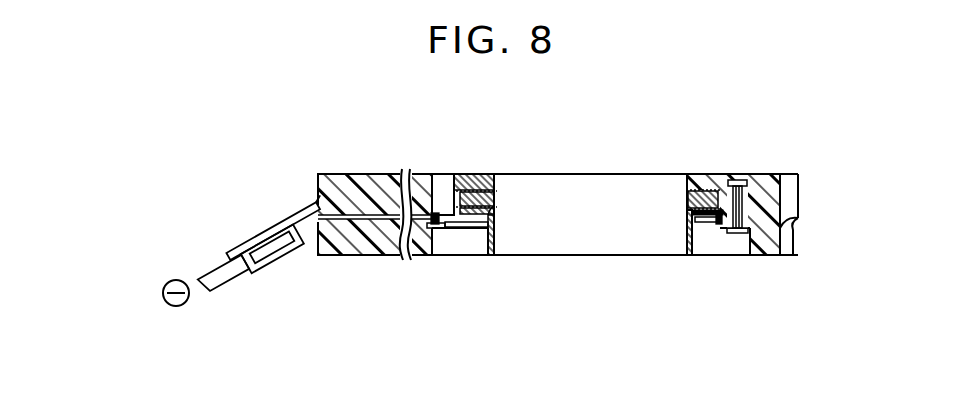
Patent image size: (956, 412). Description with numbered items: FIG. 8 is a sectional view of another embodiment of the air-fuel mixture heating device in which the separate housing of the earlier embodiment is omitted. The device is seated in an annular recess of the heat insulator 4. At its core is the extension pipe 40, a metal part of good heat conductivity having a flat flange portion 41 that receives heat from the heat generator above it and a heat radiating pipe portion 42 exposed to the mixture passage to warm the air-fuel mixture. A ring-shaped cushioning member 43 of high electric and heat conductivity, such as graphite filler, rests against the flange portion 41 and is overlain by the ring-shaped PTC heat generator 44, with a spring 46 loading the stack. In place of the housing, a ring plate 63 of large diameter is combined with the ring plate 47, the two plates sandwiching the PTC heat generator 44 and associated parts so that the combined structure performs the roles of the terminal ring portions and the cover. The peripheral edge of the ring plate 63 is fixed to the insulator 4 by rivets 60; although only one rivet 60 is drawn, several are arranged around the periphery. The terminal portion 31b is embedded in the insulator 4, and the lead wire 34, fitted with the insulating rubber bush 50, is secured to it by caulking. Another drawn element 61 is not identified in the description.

The heat insulator 4 is at (359, 183).
The terminal portion of the terminal minus 31b is at (362, 225).
The lead wire 34 is at (226, 283).
The rubber bush 50 is at (292, 263).
The conductor rod 61 is at (438, 228).
The extension pipe 40 is at (504, 226).
The flange portion 41 is at (469, 228).
The heat radiating pipe portion 42 is at (497, 238).
The PTC heat generator 44 is at (494, 199).
The ring plate 47 is at (466, 190).
The ring plate of large diameter 63 is at (480, 229).
The cushioning member 43 is at (713, 186).
The spring 46 is at (708, 223).
The rivet 60 is at (738, 186).